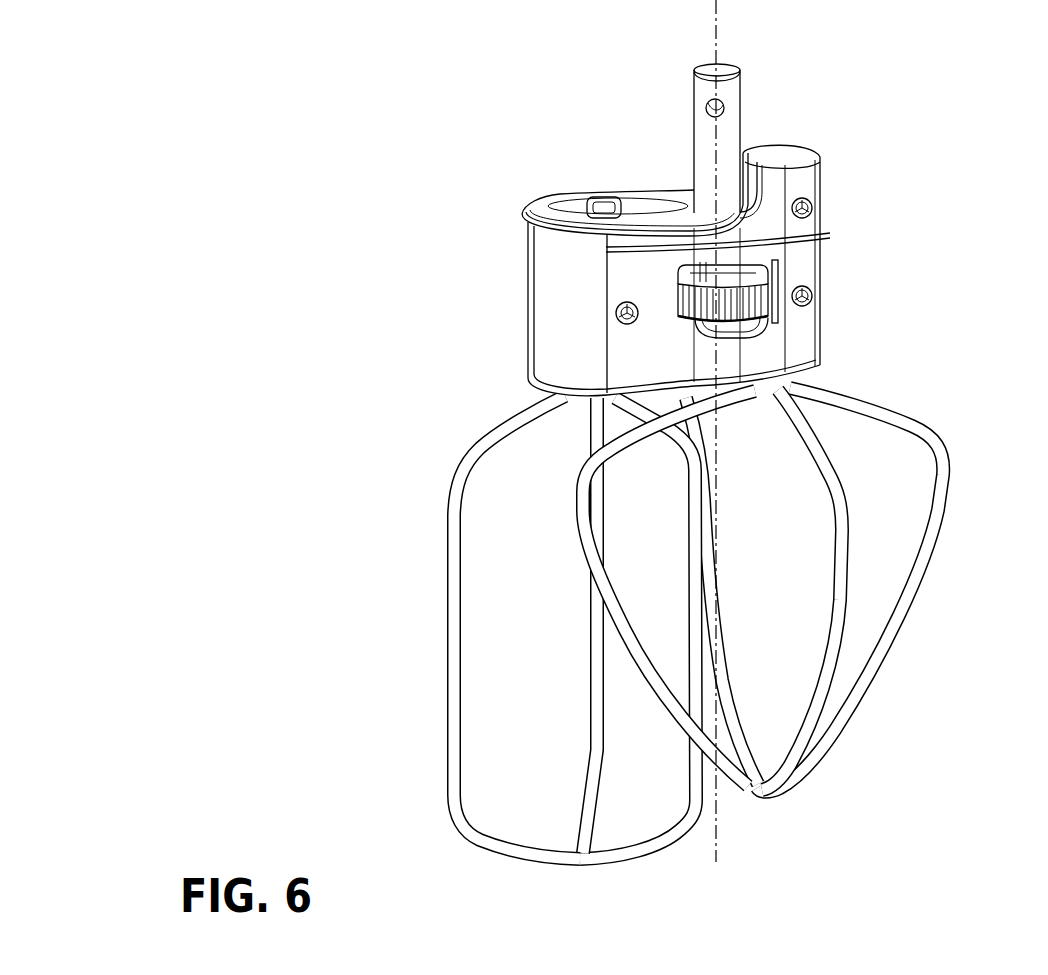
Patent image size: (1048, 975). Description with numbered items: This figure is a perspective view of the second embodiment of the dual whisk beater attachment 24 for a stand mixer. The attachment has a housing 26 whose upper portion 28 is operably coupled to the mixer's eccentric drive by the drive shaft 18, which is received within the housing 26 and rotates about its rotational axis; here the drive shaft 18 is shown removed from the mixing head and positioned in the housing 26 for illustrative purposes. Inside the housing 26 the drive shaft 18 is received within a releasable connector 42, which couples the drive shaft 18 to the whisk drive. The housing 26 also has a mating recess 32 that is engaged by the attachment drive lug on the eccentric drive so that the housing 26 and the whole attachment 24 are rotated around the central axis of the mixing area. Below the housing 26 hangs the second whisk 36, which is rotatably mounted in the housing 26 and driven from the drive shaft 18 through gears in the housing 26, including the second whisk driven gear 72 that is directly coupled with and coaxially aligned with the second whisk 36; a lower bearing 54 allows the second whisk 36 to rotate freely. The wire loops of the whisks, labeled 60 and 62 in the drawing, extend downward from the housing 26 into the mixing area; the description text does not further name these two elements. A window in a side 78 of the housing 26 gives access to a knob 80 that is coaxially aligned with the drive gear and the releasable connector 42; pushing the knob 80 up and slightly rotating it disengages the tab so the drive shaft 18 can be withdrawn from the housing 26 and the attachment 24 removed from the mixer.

The drive shaft 18 is at (735, 120).
The dual whisk beater attachment 24 is at (889, 134).
The housing 26 is at (803, 245).
The upper portion 28 is at (560, 258).
The mating recess 32 is at (658, 205).
The second whisk 36 is at (477, 451).
The releasable connector 42 is at (725, 273).
The lower bearing 54 is at (828, 398).
The wire loop 60 is at (922, 585).
The wire 62 is at (448, 606).
The second whisk driven gear 72 is at (775, 270).
The side 78 is at (740, 352).
The knob 80 is at (615, 313).